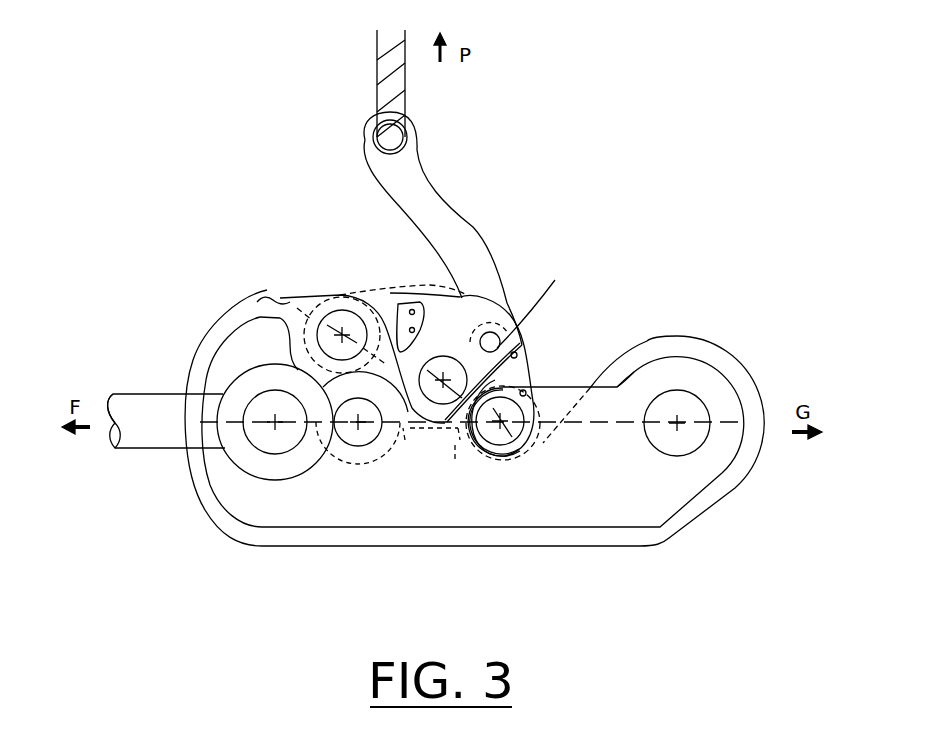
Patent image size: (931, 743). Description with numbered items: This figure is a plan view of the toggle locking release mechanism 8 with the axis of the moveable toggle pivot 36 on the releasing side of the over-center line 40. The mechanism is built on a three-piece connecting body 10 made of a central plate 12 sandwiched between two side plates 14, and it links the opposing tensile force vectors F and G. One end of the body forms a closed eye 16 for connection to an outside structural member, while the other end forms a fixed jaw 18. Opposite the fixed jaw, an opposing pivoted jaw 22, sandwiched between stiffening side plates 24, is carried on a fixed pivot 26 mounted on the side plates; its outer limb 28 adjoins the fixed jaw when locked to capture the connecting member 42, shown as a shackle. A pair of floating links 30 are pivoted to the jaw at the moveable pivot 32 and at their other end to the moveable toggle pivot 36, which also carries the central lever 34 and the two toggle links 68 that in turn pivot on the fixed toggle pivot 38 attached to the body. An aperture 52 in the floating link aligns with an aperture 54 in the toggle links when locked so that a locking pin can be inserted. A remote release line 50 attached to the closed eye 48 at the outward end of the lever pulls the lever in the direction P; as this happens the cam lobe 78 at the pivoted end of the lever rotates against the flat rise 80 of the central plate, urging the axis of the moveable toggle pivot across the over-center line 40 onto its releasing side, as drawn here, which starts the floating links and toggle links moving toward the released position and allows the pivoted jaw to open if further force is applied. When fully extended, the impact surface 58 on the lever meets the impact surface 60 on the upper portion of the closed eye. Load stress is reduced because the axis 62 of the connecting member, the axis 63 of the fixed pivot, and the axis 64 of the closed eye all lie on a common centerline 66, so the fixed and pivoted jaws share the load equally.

The toggle locking release mechanism 8 is at (548, 156).
The connecting body 10 is at (462, 560).
The central plate 12 is at (690, 343).
The side plates 14 is at (568, 508).
The closed eye 16 is at (713, 397).
The fixed jaw 18 is at (245, 497).
The opposing pivoted jaw 22 is at (207, 340).
The stiffening side plates 24 is at (253, 354).
The fixed pivot 26 is at (365, 437).
The outer limb 28 is at (183, 382).
The floating links 30 is at (371, 314).
The moveable pivot 32 is at (333, 313).
The central lever 34 is at (427, 208).
The moveable toggle pivot 36 is at (431, 379).
The fixed toggle pivot 38 is at (505, 423).
The over-center line 40 is at (263, 300).
The connecting member 42 is at (123, 405).
The closed eye 48 is at (375, 145).
The remote release line 50 is at (377, 82).
The aperture 52 is at (497, 338).
The aperture 54 is at (513, 307).
The impact surface 58 is at (507, 297).
The impact surface 60 is at (598, 372).
The axis of the connecting member 62 is at (278, 434).
The axis of the fixed pivot 63 is at (357, 432).
The axis of the closed eye 64 is at (678, 435).
The centerline 66 is at (573, 422).
The toggle links 68 is at (437, 293).
The cam lobe 78 is at (442, 440).
The flat rise 80 is at (455, 446).